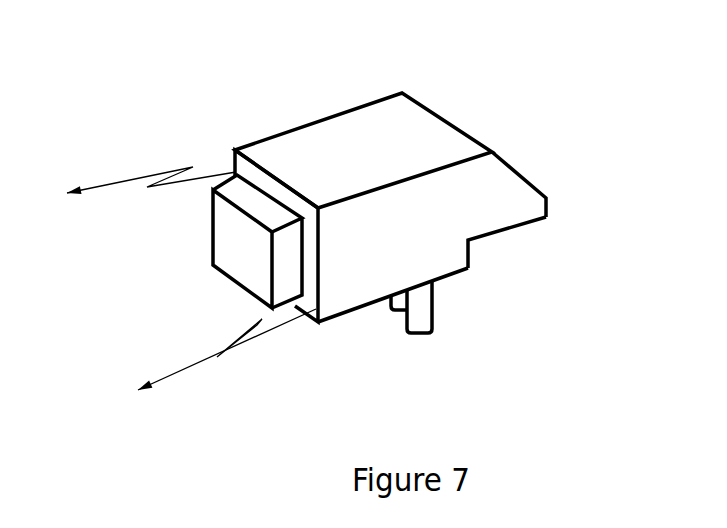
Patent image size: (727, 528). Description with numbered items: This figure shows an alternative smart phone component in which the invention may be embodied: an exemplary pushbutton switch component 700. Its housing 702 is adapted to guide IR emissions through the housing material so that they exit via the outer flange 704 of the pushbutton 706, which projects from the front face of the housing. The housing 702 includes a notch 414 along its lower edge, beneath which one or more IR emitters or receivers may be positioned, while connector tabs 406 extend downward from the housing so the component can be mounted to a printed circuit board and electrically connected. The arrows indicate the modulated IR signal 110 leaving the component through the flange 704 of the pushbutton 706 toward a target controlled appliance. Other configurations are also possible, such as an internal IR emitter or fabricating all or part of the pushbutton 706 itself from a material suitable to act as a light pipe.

The pushbutton switch component 700 is at (479, 410).
The housing 702 is at (443, 114).
The outer flange 704 is at (276, 190).
The pushbutton 706 is at (235, 242).
The connector tabs 406 is at (397, 319).
The notch 414 is at (504, 252).
The modulated IR signal 110 is at (137, 170).